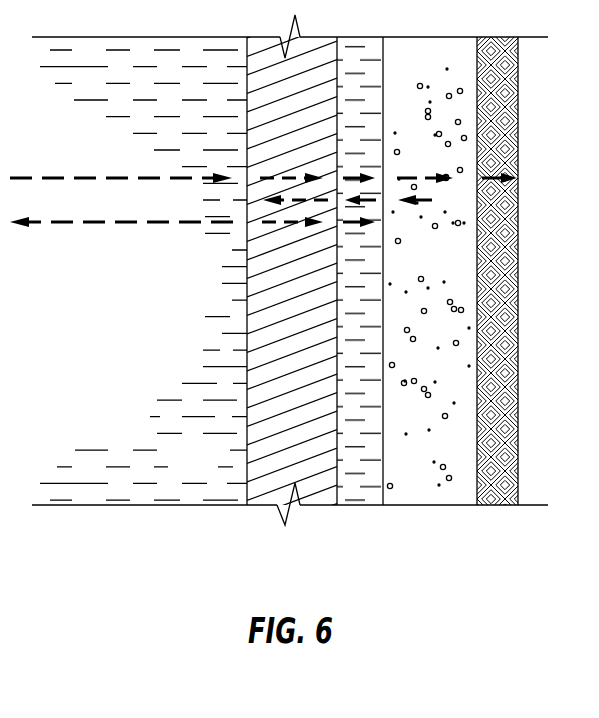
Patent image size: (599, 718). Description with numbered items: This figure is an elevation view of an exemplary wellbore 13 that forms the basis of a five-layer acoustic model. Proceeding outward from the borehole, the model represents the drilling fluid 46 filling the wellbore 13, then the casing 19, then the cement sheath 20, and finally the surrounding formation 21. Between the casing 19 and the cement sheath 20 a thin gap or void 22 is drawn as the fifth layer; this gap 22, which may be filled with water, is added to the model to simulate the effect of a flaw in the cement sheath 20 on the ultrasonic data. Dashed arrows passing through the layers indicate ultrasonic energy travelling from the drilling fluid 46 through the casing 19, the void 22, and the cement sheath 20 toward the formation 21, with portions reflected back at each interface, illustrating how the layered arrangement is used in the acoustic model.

The wellbore 13 is at (127, 488).
The casing 19 is at (268, 497).
The void 22 is at (360, 497).
The cement sheath 20 is at (431, 495).
The formation 21 is at (497, 497).
The drilling mud 46 is at (202, 476).